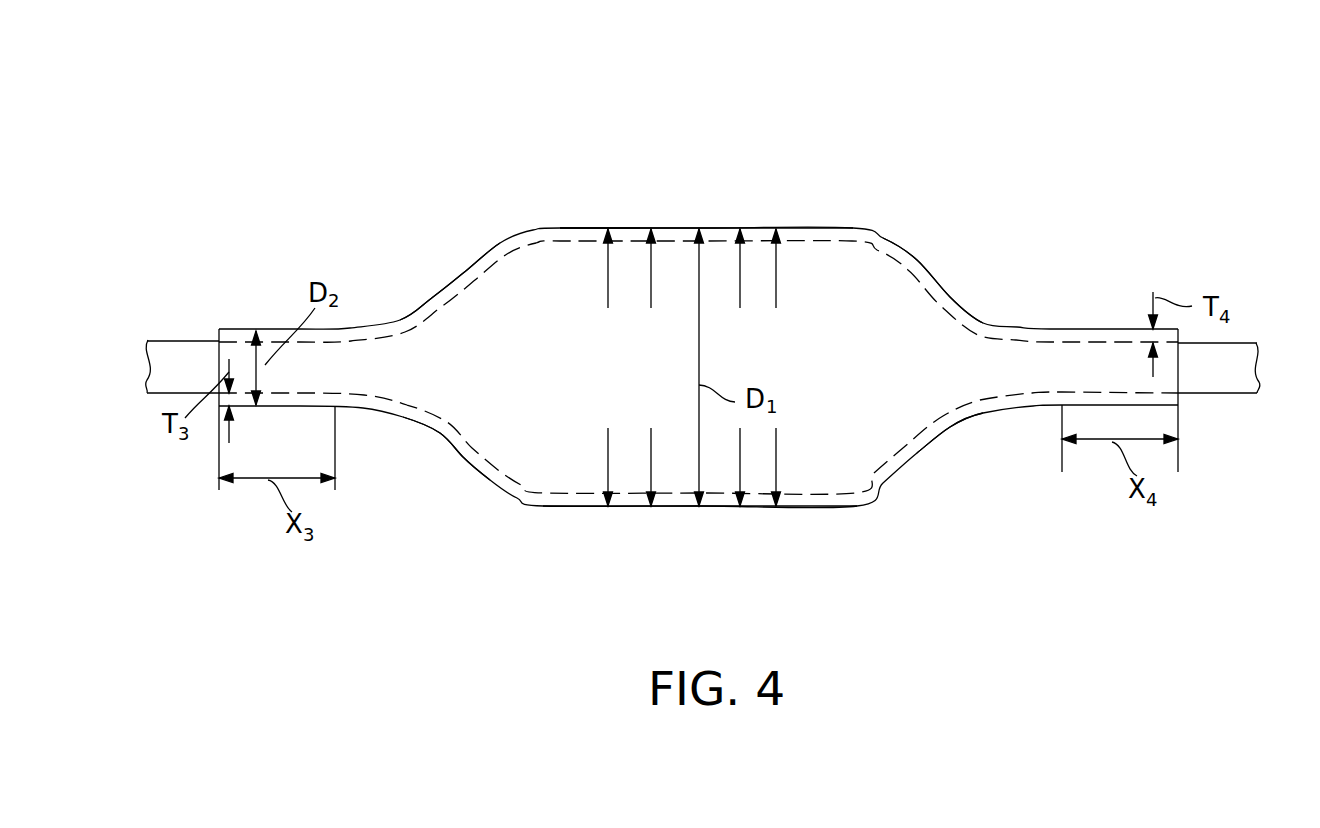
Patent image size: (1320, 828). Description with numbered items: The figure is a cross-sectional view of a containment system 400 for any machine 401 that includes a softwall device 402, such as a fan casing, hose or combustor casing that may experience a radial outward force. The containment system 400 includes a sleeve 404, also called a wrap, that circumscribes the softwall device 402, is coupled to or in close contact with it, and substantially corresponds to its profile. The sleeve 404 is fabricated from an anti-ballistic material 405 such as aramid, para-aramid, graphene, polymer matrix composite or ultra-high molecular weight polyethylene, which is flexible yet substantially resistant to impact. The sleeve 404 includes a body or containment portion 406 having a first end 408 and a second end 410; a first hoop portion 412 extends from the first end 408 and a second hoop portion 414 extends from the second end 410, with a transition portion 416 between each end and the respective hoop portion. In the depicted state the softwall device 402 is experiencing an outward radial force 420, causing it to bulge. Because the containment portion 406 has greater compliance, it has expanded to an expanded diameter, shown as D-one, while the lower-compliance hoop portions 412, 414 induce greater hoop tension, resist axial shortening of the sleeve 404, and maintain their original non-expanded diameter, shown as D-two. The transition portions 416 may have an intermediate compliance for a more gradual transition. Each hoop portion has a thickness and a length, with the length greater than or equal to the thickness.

The containment system 400 is at (500, 158).
The machine 401 is at (1217, 390).
The softwall device 402 is at (800, 293).
The sleeve 404 is at (780, 228).
The anti-ballistic material 405 is at (541, 506).
The containment portion 406 is at (623, 228).
The first end 408 is at (438, 297).
The second end 410 is at (958, 292).
The first hoop portion 412 is at (232, 328).
The second hoop portion 414 is at (1125, 329).
The transition portion 416 is at (402, 387).
The outward radial force 420 is at (776, 438).